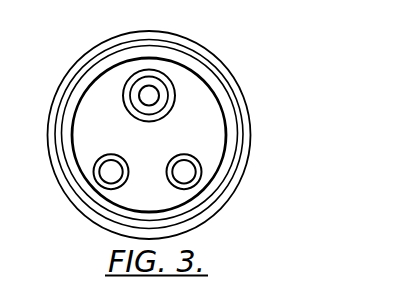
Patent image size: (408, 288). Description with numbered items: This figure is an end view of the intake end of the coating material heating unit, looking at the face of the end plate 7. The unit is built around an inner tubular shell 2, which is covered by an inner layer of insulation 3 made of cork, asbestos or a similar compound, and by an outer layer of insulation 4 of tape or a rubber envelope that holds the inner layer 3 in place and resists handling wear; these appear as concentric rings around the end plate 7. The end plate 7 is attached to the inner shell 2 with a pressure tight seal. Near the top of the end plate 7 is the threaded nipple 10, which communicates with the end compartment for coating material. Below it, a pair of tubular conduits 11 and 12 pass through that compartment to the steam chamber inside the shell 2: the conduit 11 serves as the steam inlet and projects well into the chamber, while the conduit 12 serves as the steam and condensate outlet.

The inner tubular shell 2 is at (224, 137).
The inner layer of insulation 3 is at (233, 155).
The outer layer of insulation 4 is at (239, 178).
The end plate 7 is at (205, 117).
The threaded nipple 10 is at (170, 78).
The tubular conduit 11 is at (199, 178).
The tubular conduit 12 is at (101, 185).